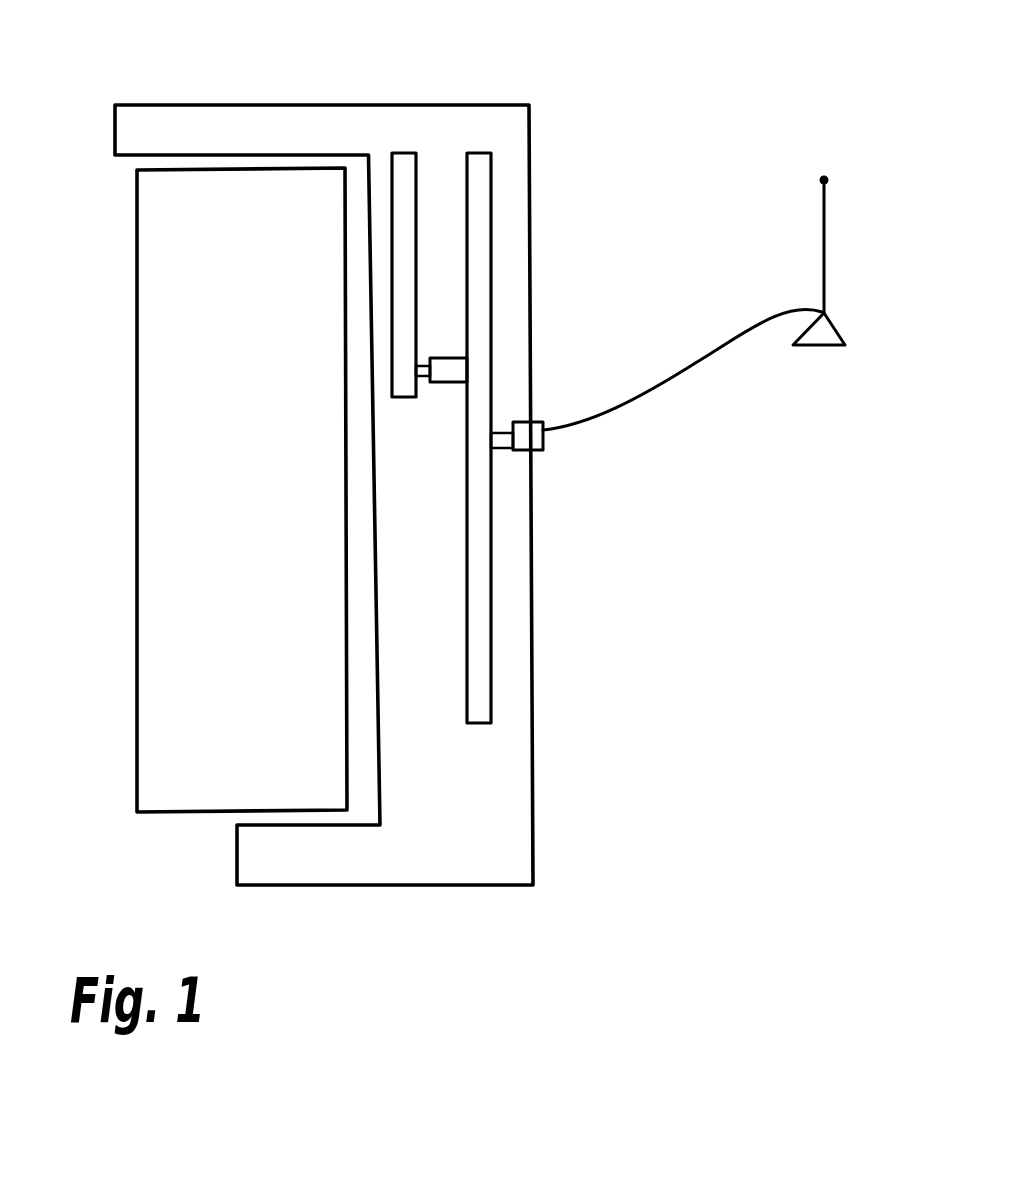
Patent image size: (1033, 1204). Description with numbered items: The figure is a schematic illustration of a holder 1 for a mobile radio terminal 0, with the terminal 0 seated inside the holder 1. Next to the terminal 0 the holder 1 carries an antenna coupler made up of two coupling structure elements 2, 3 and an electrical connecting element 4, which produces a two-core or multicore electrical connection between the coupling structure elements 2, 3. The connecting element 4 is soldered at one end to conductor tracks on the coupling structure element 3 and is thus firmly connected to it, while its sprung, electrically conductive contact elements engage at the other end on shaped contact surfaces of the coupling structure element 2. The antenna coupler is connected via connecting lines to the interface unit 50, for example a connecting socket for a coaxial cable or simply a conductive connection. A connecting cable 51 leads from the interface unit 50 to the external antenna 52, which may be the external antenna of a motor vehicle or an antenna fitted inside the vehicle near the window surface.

The mobile radio terminal 0 is at (153, 346).
The holder 1 is at (320, 104).
The coupling structure element 2 is at (407, 162).
The coupling structure element 3 is at (480, 160).
The electrical connecting element 4 is at (448, 357).
The interface unit 50 is at (523, 457).
The connecting cable 51 is at (693, 363).
The external antenna 52 is at (827, 247).